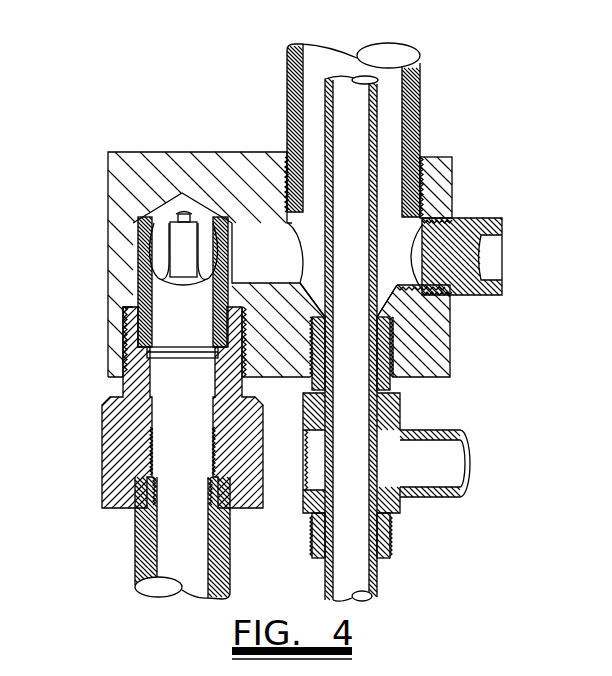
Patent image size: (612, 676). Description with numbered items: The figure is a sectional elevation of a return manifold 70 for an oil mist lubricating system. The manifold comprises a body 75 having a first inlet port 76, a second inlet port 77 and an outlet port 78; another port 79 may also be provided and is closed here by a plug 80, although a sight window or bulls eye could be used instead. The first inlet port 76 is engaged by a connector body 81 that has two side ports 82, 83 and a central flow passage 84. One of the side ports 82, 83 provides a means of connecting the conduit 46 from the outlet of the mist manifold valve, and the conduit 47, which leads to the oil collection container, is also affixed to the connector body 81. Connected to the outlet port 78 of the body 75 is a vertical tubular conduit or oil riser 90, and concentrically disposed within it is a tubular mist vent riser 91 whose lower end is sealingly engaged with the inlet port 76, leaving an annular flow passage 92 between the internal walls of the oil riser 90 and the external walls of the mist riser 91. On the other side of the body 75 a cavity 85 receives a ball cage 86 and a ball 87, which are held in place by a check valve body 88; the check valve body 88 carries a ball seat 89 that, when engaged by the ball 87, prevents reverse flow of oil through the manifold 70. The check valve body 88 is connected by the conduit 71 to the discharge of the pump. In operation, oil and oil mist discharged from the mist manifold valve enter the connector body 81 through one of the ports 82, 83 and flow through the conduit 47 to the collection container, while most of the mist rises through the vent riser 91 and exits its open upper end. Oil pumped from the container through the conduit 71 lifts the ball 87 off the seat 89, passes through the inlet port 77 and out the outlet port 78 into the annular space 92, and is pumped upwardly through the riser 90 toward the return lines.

The return manifold 70 is at (143, 138).
The body 75 is at (246, 174).
The cavity 85 is at (178, 201).
The ball 87 is at (150, 232).
The ball cage 86 is at (152, 240).
The second inlet port 77 is at (257, 263).
The tubular mist vent riser 91 is at (297, 80).
The vertical tubular conduit or oil riser 90 is at (412, 84).
The annular flow passage 92 is at (389, 122).
The outlet port 78 is at (390, 173).
The port 79 is at (420, 232).
The plug 80 is at (492, 223).
The first inlet port 76 is at (368, 306).
The check valve body 88 is at (123, 378).
The ball seat 89 is at (180, 358).
The conduit 71 is at (140, 560).
The side port 83 is at (312, 468).
The conduit 46 is at (440, 433).
The side port 82 is at (392, 466).
The connector body 81 is at (392, 532).
The central flow passage 84 is at (365, 539).
The conduit 47 is at (373, 580).